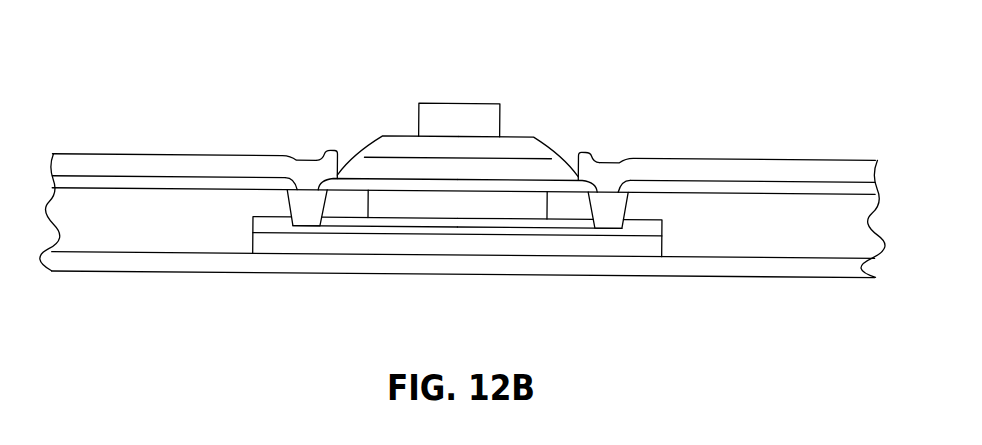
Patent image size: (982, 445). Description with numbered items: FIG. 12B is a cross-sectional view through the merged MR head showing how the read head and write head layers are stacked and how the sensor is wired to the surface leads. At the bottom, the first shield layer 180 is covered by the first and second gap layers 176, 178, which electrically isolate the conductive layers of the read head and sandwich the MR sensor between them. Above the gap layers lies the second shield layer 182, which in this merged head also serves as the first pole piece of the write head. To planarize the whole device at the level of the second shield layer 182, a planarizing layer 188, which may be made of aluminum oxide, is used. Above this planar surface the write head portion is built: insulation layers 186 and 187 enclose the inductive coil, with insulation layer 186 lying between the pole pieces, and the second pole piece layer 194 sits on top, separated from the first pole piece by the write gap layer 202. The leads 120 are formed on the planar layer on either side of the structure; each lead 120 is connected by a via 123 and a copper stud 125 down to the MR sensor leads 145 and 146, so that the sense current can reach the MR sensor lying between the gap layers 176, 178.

The leads 120 is at (103, 163).
The vias 123 is at (307, 220).
The copper studs 125 is at (308, 200).
The MR sensor lead 145 is at (312, 227).
The MR sensor lead 146 is at (610, 228).
The first gap layer 176 is at (273, 227).
The second gap layer 178 is at (248, 310).
The first shield layer 180 is at (567, 244).
The second shield layer 182 is at (395, 200).
The insulation layer 186 is at (527, 170).
The insulation layer 187 is at (440, 147).
The planarizing layer 188 is at (133, 237).
The second pole piece layer 194 is at (483, 113).
The write gap layer 202 is at (498, 187).